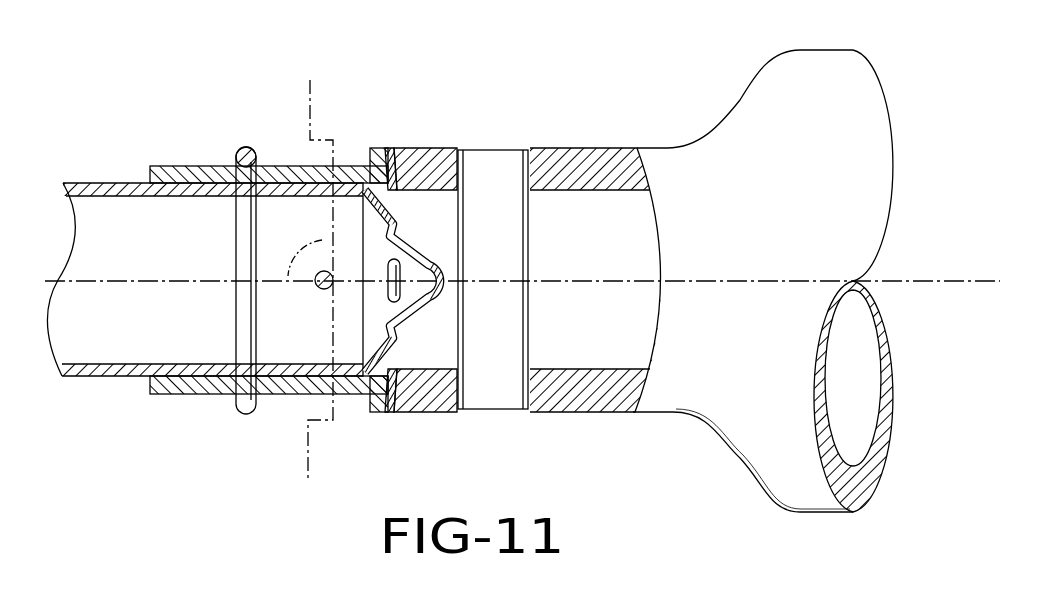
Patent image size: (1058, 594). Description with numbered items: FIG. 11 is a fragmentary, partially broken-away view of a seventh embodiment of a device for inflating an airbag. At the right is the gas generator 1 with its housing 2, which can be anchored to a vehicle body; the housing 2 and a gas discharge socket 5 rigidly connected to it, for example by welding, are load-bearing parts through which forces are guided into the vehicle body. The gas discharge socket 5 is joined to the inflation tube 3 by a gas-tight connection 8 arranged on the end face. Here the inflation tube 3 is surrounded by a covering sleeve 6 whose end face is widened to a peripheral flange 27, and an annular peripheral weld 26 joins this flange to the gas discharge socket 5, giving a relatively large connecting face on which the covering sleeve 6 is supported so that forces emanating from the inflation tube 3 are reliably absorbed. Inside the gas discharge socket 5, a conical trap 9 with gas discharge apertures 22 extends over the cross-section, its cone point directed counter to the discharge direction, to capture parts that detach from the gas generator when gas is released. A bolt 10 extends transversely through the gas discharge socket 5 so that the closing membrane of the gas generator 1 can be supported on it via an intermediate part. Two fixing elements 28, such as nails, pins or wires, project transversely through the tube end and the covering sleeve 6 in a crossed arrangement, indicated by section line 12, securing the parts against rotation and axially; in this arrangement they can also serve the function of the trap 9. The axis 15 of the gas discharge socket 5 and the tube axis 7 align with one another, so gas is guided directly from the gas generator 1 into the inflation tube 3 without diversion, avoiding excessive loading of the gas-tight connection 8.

The gas generator 1 is at (740, 68).
The housing 2 is at (815, 62).
The inflation tube 3 is at (128, 375).
The gas discharge socket 5 is at (595, 402).
The covering sleeve 6 is at (212, 388).
The tube axis 7 is at (322, 240).
The gas-tight connection 8 is at (397, 140).
The trap 9 is at (395, 350).
The bolt 10 is at (493, 173).
The section of FIG. 12 is at (310, 80).
The axis of the gas discharge socket 15 is at (708, 270).
The gas discharge apertures 22 is at (407, 243).
The peripheral weld 26 is at (389, 158).
The peripheral flange 27 is at (374, 158).
The fixing element 28 is at (240, 243).